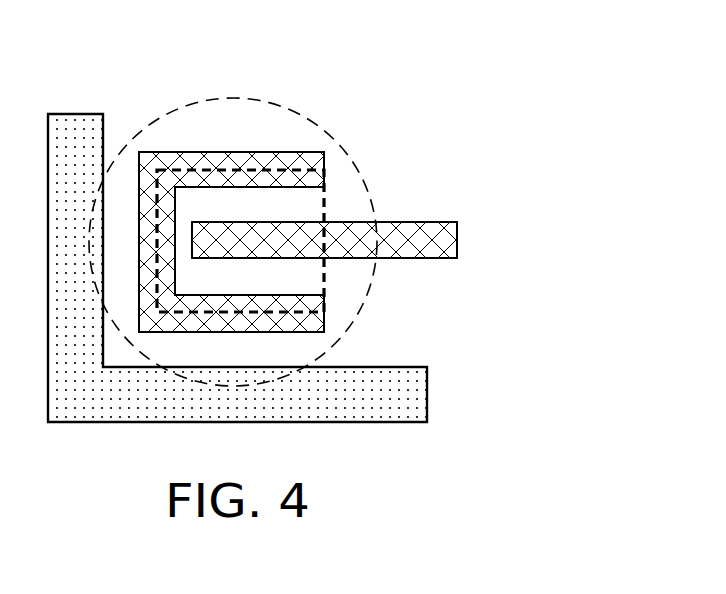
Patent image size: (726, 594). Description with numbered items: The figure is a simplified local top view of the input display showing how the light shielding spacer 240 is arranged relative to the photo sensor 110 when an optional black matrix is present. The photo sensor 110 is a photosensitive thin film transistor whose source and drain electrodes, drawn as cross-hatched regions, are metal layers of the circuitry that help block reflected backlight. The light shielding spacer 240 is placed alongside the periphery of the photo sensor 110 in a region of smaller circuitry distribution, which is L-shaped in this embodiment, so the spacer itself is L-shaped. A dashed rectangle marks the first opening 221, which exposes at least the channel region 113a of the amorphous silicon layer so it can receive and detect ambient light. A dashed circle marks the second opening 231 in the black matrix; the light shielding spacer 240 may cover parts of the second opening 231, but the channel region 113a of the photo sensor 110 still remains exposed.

The light shielding spacer 240 is at (76, 125).
The photo sensor 110 is at (379, 166).
The first opening 221 is at (325, 200).
The second opening 231 is at (315, 116).
The channel region 113a is at (327, 281).